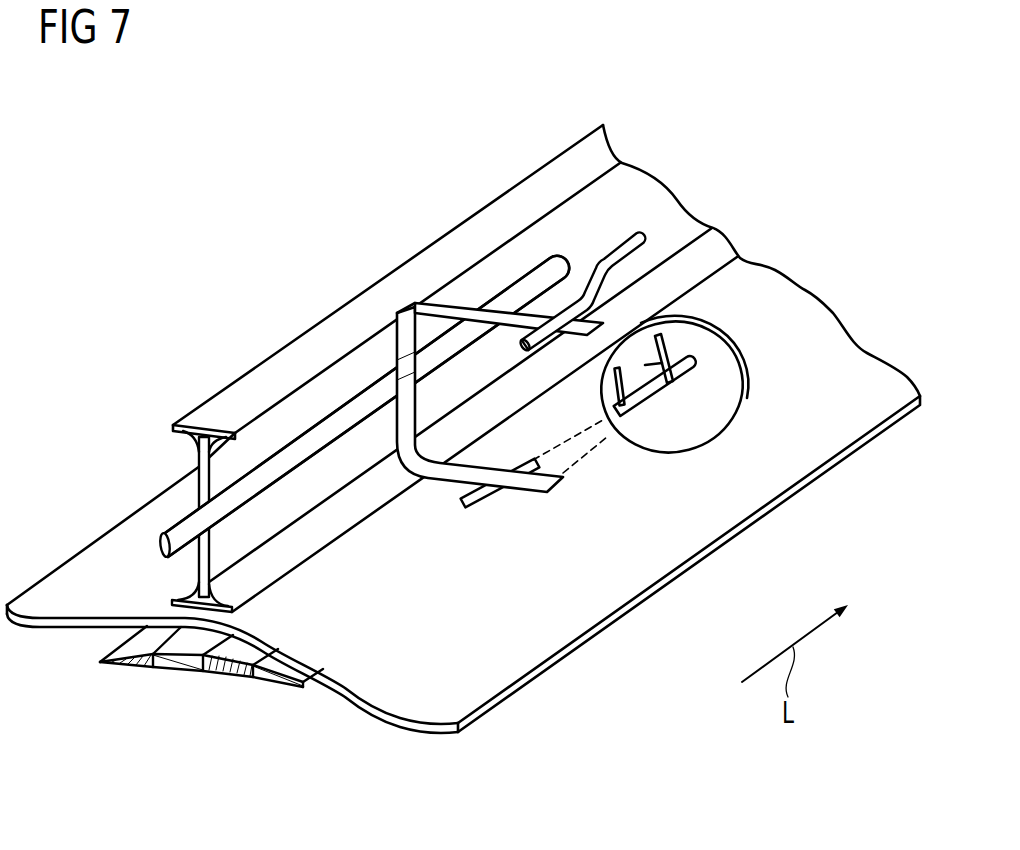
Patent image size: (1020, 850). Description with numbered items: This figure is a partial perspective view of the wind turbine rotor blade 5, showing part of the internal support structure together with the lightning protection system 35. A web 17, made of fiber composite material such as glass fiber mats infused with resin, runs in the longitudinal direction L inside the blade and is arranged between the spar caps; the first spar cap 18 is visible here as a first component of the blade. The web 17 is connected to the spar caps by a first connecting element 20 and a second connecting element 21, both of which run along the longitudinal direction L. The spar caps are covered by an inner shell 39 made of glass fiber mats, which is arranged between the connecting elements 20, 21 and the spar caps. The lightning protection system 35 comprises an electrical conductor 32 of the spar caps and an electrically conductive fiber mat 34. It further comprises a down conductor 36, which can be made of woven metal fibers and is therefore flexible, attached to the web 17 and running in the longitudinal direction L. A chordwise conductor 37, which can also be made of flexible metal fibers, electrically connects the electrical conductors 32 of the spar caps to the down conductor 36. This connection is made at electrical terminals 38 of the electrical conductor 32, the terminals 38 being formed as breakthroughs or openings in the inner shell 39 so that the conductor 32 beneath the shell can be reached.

The rotor blade 5 is at (352, 104).
The web 17 is at (200, 462).
The first spar cap 18 is at (162, 668).
The first connecting element 20 is at (328, 523).
The second connecting element 21 is at (237, 398).
The electrical conductor 32 is at (647, 236).
The electrically conductive fiber mat 34 is at (662, 334).
The lightning protection system 35 is at (131, 542).
The down conductor 36 is at (331, 412).
The chordwise conductor 37 is at (452, 312).
The electrical terminal 38 is at (490, 497).
The inner shell 39 is at (418, 694).